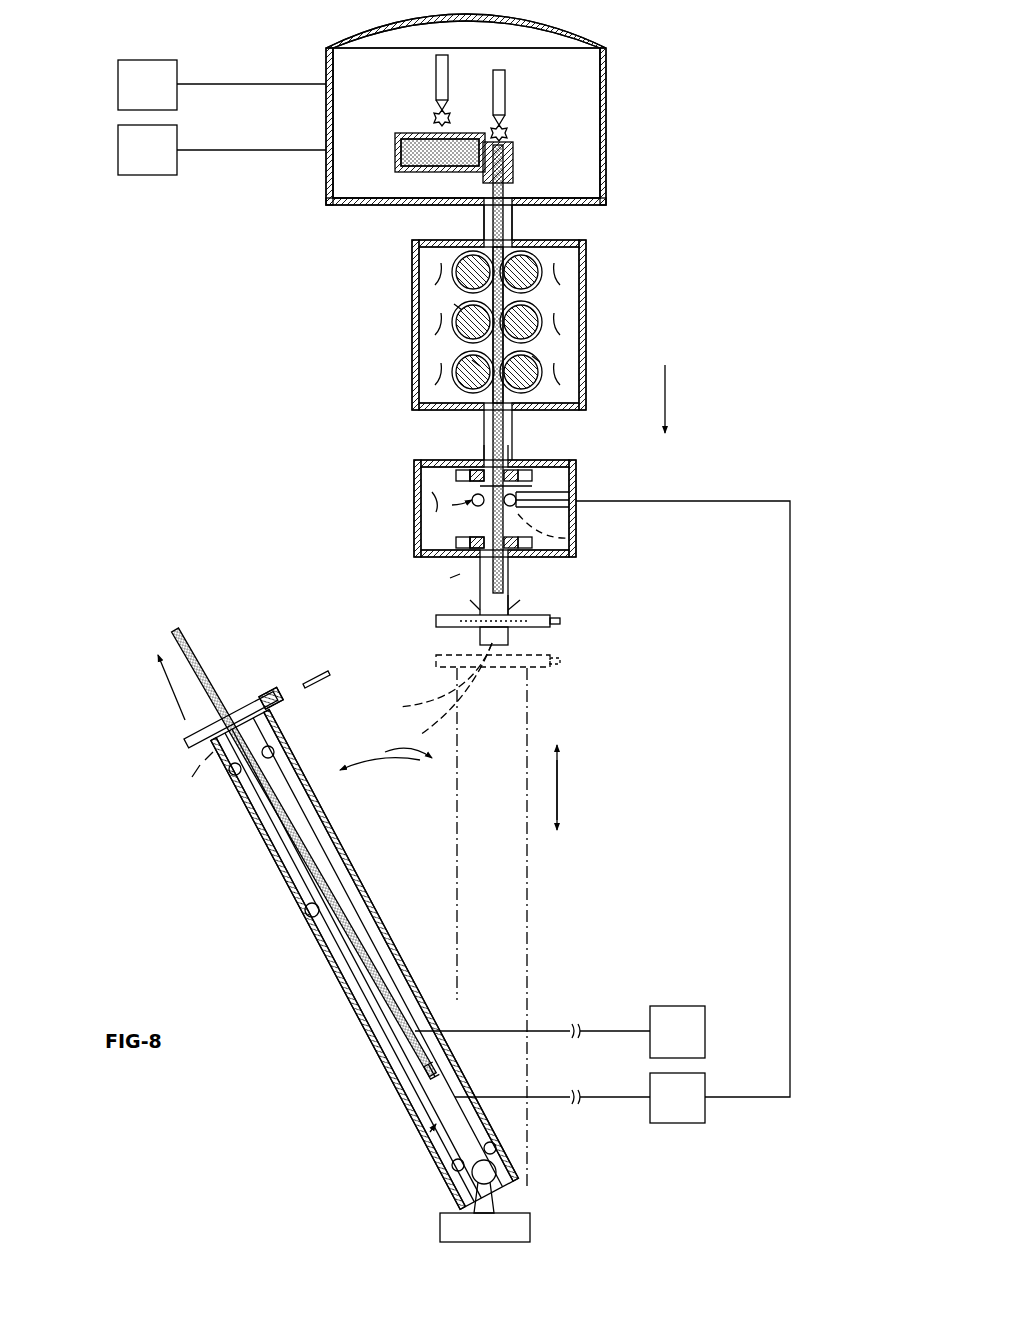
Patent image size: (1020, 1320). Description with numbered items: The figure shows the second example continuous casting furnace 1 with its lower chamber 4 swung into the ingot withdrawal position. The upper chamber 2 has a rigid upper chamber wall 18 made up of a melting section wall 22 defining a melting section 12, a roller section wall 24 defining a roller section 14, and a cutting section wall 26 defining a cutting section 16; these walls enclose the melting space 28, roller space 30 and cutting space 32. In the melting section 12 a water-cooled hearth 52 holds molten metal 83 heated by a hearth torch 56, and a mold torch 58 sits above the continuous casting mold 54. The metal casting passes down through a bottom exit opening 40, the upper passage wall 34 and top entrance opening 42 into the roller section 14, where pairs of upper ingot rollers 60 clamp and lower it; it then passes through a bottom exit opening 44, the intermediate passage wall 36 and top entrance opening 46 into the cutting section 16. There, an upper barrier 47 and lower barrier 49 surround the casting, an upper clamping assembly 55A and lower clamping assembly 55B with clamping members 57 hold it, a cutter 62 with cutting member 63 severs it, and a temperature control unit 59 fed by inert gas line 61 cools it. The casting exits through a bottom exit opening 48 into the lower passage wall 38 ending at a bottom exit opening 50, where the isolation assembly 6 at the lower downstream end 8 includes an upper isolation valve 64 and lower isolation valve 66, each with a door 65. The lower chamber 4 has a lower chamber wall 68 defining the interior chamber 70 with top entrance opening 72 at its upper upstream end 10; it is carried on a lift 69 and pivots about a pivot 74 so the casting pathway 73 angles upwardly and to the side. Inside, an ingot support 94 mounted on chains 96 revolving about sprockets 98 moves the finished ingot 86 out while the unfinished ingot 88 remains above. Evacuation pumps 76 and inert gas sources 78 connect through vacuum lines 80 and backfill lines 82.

The continuous casting furnace 1 is at (690, 118).
The first or upper chamber 2 is at (430, 325).
The second or lower chamber 4 is at (397, 938).
The isolation assembly 6 is at (430, 618).
The lower downstream end 8 is at (518, 608).
The upper upstream end 10 is at (545, 685).
The melting sub-chamber or section 12 is at (612, 58).
The roller sub-chamber or section 14 is at (430, 325).
The cutting sub-chamber or section 16 is at (431, 506).
The upper chamber wall 18 is at (400, 125).
The melting section wall 22 is at (372, 178).
The roller section wall 24 is at (415, 247).
The cutting section wall 26 is at (414, 480).
The interior melting space 28 is at (375, 180).
The interior roller space 30 is at (440, 300).
The interior cutting space 32 is at (432, 496).
The upper passage wall 34 is at (513, 225).
The intermediate passage wall 36 is at (513, 428).
The lower passage wall 38 is at (512, 590).
The bottom exit opening 40 is at (505, 195).
The top entrance opening 42 is at (483, 225).
The bottom exit opening 44 is at (483, 425).
The top entrance opening 46 is at (483, 455).
The upper barrier 47 is at (510, 455).
The bottom exit opening 48 is at (480, 566).
The lower barrier 49 is at (510, 565).
The bottom exit opening 50 is at (452, 672).
The melting hearth 52 is at (421, 123).
The continuous casting mold 54 is at (514, 156).
The upper clamping assembly 55A is at (540, 475).
The lower clamping assembly 55B is at (456, 543).
The melting hearth heat source 56 is at (436, 76).
The clamping members 57 is at (462, 541).
The mold heat source 58 is at (506, 96).
The temperature control unit 59 is at (470, 500).
The upper ingot rollers 60 is at (455, 262).
The inert gas line 61 is at (790, 765).
The cutter 62 is at (570, 508).
The cutting member 63 is at (570, 536).
The upper isolation valve 64 is at (502, 639).
The door 65 is at (562, 620).
The lower isolation valve 66 is at (406, 699).
The lower chamber wall 68 is at (265, 862).
The lower chamber lift 69 is at (440, 1228).
The lower interior chamber 70 is at (306, 916).
The top entrance opening 72 is at (240, 722).
The casting pathway 73 is at (455, 370).
The pivot 74 is at (497, 1172).
The evacuation pump 76 is at (120, 151).
The inert gas source 78 is at (120, 86).
The vacuum line 80 is at (246, 150).
The backfill line 82 is at (246, 84).
The molten metal 83 is at (462, 142).
The finished ingot 86 is at (205, 652).
The unfinished ingot 88 is at (508, 322).
The ingot support 94 is at (438, 1072).
The chains 96 is at (338, 856).
The sprockets 98 is at (278, 760).